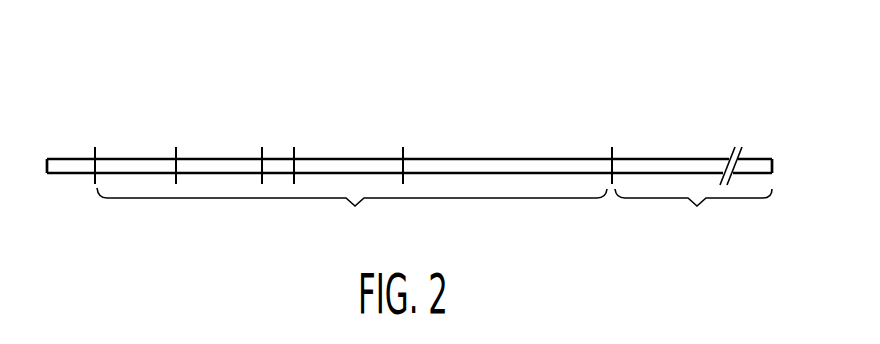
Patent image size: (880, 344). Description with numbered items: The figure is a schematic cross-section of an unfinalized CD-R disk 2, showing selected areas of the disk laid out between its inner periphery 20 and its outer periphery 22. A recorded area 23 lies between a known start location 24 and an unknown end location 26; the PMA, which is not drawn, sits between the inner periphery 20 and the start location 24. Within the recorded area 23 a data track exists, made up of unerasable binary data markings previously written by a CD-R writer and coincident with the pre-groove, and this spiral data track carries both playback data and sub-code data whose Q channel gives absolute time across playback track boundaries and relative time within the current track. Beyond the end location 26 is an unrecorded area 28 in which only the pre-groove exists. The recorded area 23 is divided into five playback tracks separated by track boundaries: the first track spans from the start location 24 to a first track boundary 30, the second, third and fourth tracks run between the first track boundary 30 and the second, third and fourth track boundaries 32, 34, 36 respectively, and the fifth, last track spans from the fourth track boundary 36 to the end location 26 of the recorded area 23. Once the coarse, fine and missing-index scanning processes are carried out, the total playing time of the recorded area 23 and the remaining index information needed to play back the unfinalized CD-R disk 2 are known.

The unfinalized CD-R disk 2 is at (681, 98).
The inner periphery 20 is at (47, 166).
The outer periphery 22 is at (773, 165).
The recorded area 23 is at (352, 210).
The start location 24 is at (96, 150).
The end location 26 is at (613, 150).
The unrecorded area 28 is at (693, 211).
The first track boundary 30 is at (177, 150).
The second track boundary 32 is at (261, 150).
The third track boundary 34 is at (295, 150).
The fourth track boundary 36 is at (404, 150).